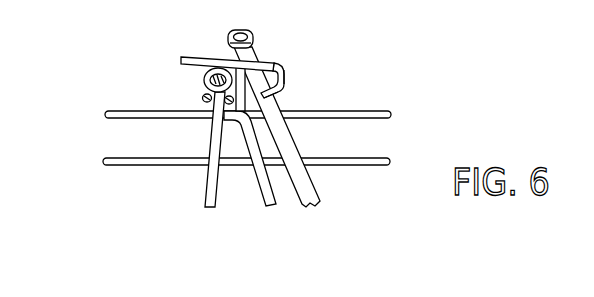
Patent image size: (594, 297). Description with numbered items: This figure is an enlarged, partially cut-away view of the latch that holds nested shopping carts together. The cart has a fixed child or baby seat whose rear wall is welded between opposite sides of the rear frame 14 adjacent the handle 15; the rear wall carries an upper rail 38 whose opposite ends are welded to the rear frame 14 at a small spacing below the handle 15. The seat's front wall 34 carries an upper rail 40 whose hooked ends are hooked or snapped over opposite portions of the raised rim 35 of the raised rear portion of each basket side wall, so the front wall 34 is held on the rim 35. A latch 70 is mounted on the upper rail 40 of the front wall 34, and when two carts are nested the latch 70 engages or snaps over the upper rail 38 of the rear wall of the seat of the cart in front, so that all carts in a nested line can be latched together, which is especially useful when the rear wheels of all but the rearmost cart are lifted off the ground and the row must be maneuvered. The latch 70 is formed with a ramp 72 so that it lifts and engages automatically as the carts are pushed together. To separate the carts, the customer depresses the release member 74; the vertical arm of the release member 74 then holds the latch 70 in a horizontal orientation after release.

The rear frame 14 is at (305, 188).
The handle 15 is at (251, 40).
The front wall 34 is at (213, 138).
The raised rim 35 is at (362, 111).
The upper rail 38 is at (284, 77).
The upper rail 40 is at (203, 97).
The latch 70 is at (276, 80).
The ramp 72 is at (276, 93).
The release member 74 is at (200, 57).